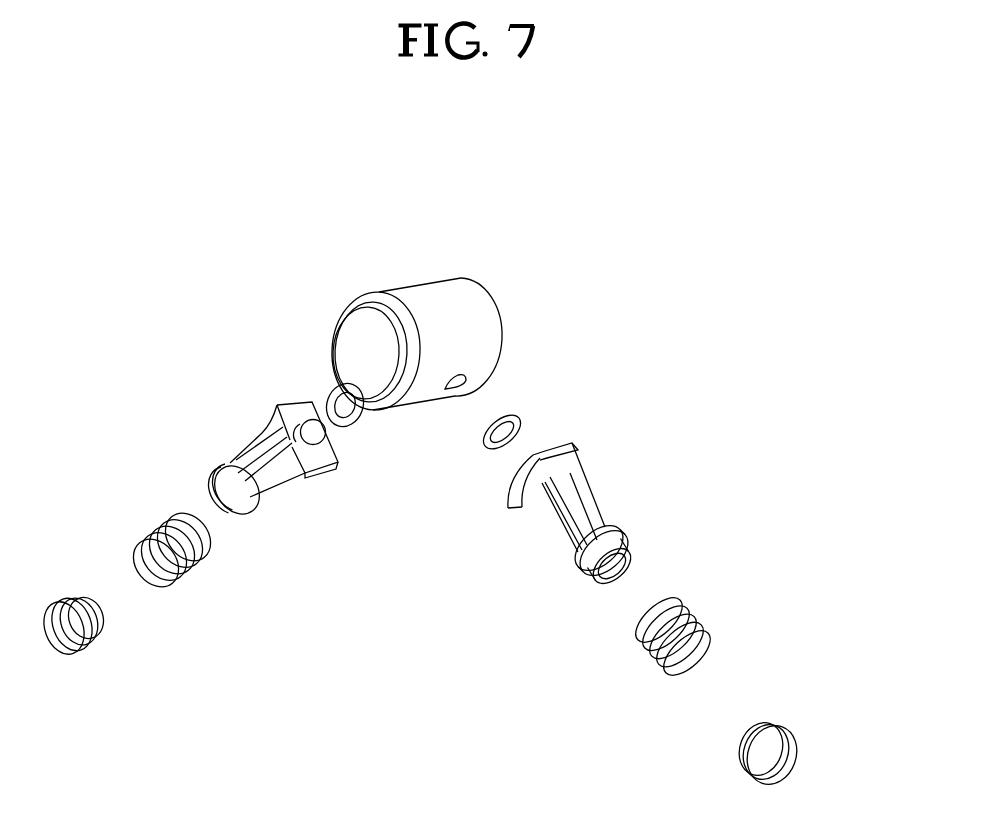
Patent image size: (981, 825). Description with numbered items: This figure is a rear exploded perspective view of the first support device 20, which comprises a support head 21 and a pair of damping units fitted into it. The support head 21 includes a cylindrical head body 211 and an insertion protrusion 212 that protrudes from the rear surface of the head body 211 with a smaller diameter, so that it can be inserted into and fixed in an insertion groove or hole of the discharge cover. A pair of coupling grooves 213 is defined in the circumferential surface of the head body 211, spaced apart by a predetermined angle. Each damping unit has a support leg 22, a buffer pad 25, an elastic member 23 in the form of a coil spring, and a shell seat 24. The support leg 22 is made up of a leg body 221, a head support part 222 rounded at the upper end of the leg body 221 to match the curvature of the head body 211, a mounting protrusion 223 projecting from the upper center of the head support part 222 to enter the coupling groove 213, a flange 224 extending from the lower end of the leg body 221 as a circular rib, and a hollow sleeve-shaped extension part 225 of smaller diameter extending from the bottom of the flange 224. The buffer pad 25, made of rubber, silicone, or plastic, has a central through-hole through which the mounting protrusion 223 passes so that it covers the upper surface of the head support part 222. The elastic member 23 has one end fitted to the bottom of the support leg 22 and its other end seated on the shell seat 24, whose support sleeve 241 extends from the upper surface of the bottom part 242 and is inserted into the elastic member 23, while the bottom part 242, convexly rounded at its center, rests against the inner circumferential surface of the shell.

The first support device 20 is at (614, 190).
The support head 21 is at (543, 216).
The head body 211 is at (420, 297).
The insertion protrusion 212 is at (352, 338).
The coupling groove 213 is at (467, 380).
The support leg 22 is at (405, 467).
The leg body 221 is at (547, 520).
The head support part 222 is at (512, 505).
The mounting protrusion 223 is at (527, 473).
The flange 224 is at (578, 565).
The extension part 225 is at (592, 586).
The elastic member 23 is at (692, 608).
The shell seat 24 is at (866, 693).
The support sleeve 241 is at (767, 727).
The bottom part 242 is at (787, 753).
The buffer pad 25 is at (521, 430).